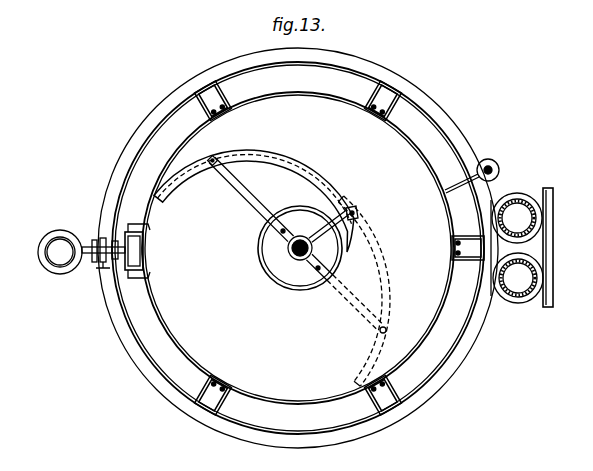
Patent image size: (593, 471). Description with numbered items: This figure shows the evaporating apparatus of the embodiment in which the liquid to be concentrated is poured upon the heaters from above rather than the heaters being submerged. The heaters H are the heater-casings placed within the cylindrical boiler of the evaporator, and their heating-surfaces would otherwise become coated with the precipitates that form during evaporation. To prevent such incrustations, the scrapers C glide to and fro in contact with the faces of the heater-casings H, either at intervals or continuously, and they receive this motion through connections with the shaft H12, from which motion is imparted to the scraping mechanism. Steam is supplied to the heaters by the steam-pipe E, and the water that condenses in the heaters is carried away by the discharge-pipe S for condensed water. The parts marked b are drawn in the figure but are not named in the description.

The heater H is at (298, 248).
The shaft H12 is at (283, 223).
The scraper C is at (278, 264).
The steam-pipe E is at (94, 251).
The discharge-pipe for condensed water S is at (478, 173).
The gauge b is at (522, 247).